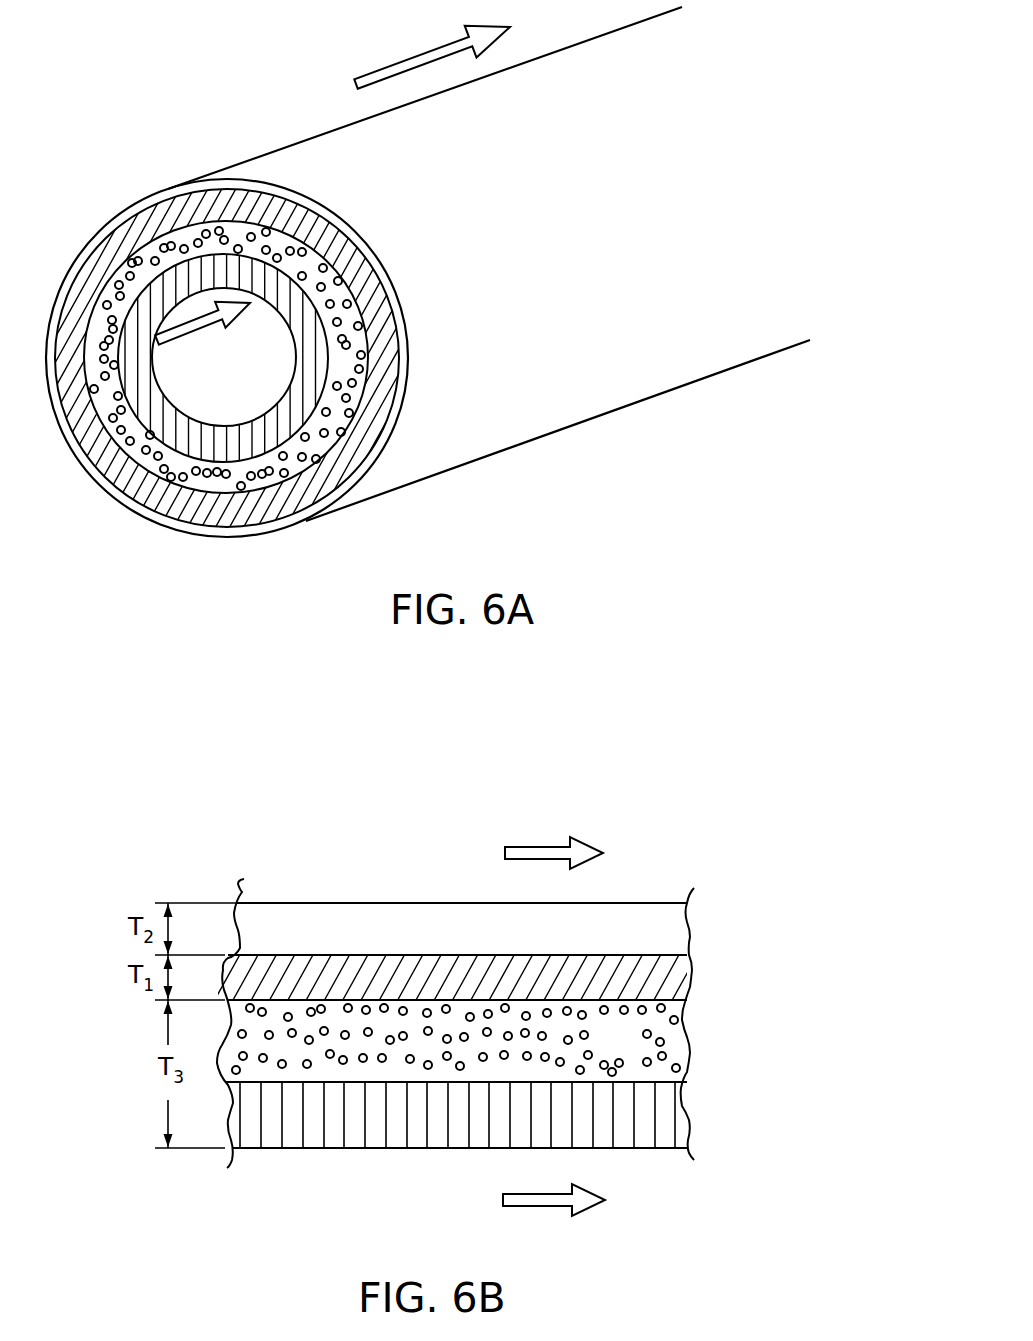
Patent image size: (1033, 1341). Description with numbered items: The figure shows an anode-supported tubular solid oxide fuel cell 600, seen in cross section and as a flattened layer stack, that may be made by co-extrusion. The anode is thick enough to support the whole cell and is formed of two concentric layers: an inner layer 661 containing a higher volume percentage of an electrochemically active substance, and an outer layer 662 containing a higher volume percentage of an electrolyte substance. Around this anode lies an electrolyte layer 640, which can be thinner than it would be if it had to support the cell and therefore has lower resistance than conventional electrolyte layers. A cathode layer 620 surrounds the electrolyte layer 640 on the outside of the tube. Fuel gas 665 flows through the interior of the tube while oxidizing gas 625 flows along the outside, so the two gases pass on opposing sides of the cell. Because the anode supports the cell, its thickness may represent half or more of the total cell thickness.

In FIG. 6A, the anode-supported tubular solid oxide fuel cell 600 is at (563, 451).
In FIG. 6B, the anode-supported tubular solid oxide fuel cell 600 is at (300, 888).
In FIG. 6A, the cathode layer 620 is at (162, 518).
In FIG. 6B, the cathode layer 620 is at (640, 950).
In FIG. 6A, the oxidizing gas 625 is at (297, 138).
In FIG. 6B, the oxidizing gas 625 is at (482, 897).
In FIG. 6A, the electrolyte layer 640 is at (350, 453).
In FIG. 6B, the electrolyte layer 640 is at (640, 990).
In FIG. 6A, the inner layer 661 is at (220, 447).
In FIG. 6B, the inner layer 661 is at (642, 1132).
In FIG. 6A, the outer layer 662 is at (287, 458).
In FIG. 6B, the outer layer 662 is at (640, 1053).
In FIG. 6A, the fuel gas 665 is at (239, 419).
In FIG. 6B, the fuel gas 665 is at (442, 1242).